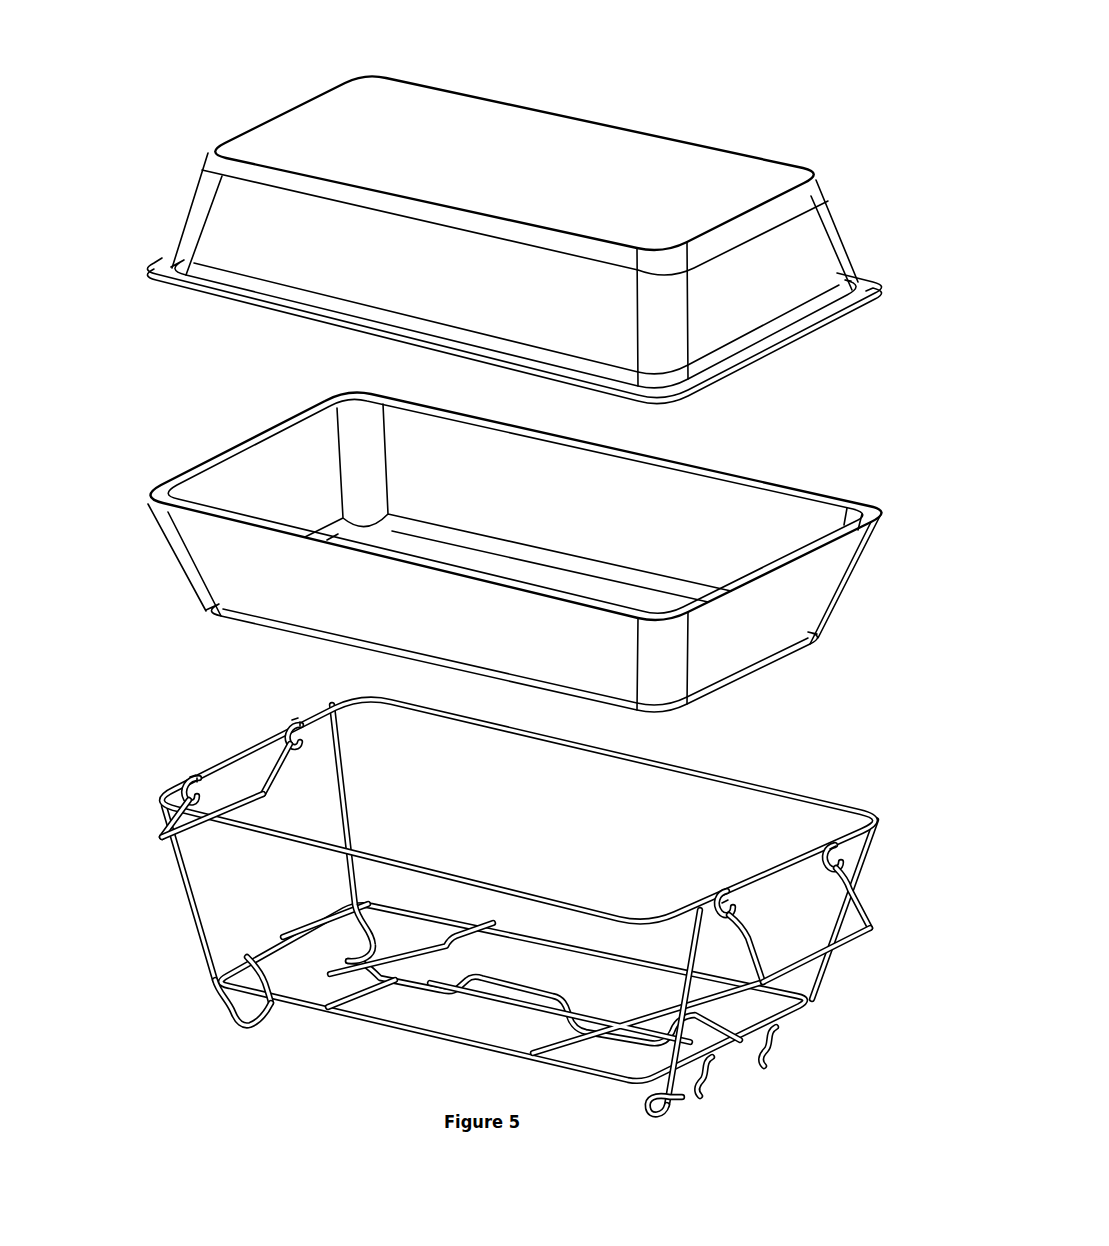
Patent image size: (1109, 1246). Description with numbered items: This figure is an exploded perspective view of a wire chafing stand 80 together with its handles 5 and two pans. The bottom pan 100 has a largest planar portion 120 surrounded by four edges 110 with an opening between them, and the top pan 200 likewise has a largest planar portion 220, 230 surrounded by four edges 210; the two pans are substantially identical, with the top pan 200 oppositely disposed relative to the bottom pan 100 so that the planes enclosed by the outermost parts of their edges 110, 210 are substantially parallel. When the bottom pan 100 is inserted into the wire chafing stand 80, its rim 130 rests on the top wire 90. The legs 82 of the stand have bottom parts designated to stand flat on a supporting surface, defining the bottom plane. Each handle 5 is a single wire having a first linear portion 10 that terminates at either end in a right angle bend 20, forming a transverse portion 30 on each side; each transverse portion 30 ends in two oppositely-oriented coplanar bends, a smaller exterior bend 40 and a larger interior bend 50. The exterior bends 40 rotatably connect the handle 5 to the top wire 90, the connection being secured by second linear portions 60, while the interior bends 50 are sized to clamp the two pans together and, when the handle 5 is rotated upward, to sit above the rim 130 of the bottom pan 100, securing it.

The handle 5 is at (190, 893).
The first linear portion 10 is at (486, 923).
The right angle bend 20 is at (263, 795).
The transverse portion 30 is at (277, 766).
The exterior bend 40 is at (190, 777).
The interior bend 50 is at (202, 795).
The second linear portion 60 is at (197, 778).
The wire chafing stand 80 is at (183, 898).
The leg 82 is at (347, 970).
The top wire 90 is at (795, 800).
The bottom pan 100 is at (531, 537).
The edge 110 is at (260, 492).
The largest planar portion 120 is at (480, 563).
The rim 130 is at (253, 438).
The top pan 200 is at (507, 209).
The edge 210 is at (228, 221).
The largest planar portion 220 is at (475, 130).
The largest planar portion 230 is at (183, 283).